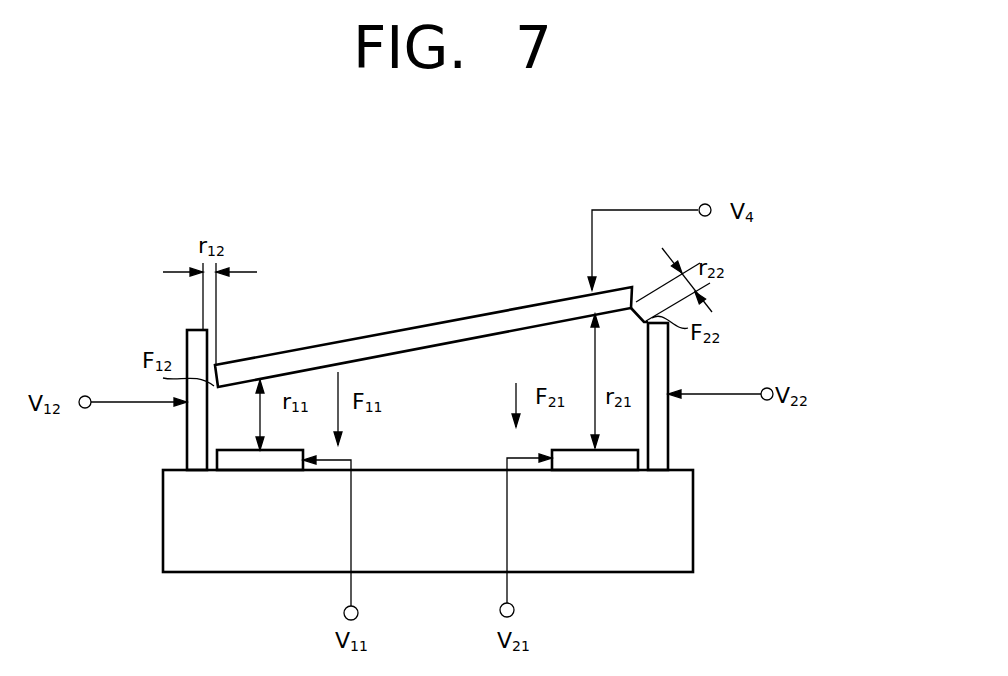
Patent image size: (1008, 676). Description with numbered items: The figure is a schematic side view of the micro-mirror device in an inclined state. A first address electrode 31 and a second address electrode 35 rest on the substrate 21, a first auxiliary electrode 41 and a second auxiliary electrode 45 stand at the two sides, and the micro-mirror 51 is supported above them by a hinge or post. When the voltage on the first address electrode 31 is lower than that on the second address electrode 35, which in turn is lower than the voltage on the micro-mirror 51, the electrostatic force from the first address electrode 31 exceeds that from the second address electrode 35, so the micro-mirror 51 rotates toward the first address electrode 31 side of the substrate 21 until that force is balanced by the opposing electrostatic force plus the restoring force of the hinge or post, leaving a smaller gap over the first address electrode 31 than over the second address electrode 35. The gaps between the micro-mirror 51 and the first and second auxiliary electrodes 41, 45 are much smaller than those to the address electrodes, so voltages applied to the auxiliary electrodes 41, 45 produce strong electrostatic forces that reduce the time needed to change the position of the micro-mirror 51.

The substrate 21 is at (693, 548).
The first address electrode 31 is at (221, 463).
The second address electrode 35 is at (657, 468).
The first auxiliary electrode 41 is at (192, 445).
The second auxiliary electrode 45 is at (668, 428).
The micro-mirror 51 is at (533, 310).